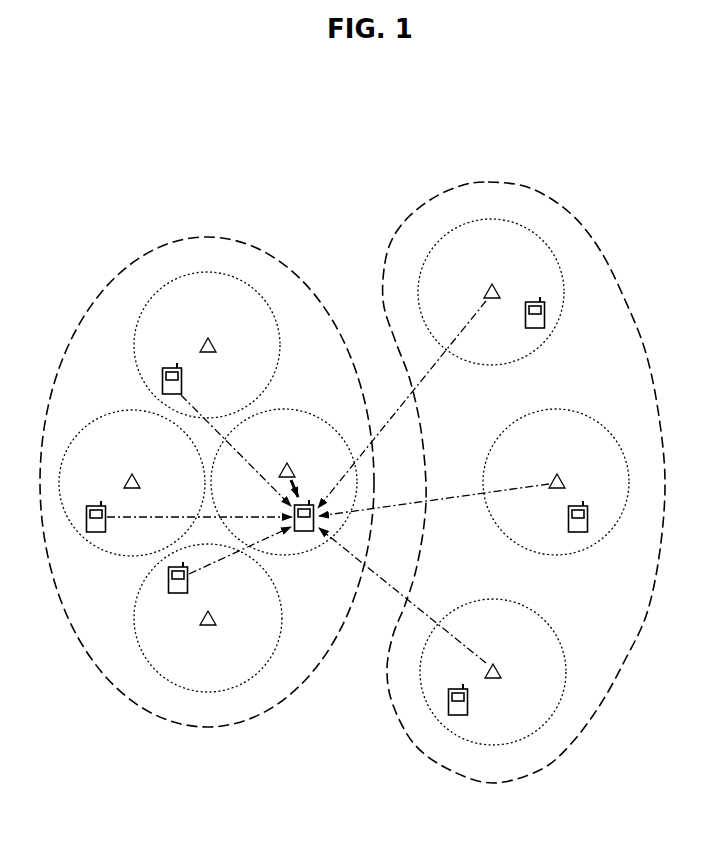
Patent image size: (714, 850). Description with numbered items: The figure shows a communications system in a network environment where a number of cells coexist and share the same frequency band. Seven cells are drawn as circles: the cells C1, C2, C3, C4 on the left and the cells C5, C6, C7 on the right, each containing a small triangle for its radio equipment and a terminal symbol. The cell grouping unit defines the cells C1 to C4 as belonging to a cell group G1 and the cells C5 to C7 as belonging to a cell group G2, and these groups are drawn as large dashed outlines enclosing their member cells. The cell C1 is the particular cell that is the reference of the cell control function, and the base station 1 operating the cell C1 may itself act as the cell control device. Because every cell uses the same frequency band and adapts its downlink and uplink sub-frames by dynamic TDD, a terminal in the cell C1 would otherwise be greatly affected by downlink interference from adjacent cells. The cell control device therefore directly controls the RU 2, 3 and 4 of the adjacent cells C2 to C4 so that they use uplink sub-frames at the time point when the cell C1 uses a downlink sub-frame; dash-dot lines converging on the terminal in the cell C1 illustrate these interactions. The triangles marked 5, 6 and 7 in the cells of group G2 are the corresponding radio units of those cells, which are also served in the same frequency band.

The base station 1 is at (292, 463).
The RU 2 is at (214, 340).
The RU 3 is at (139, 475).
The RU 4 is at (214, 611).
The base station of cell C5 5 is at (499, 285).
The base station of cell C6 6 is at (565, 475).
The base station of cell C7 7 is at (501, 664).
The cell C1 is at (314, 413).
The cell C2 is at (282, 347).
The cell C3 is at (101, 413).
The cell C4 is at (283, 618).
The cell C5 is at (560, 318).
The cell C6 is at (597, 419).
The cell C7 is at (556, 630).
The cell group G1 is at (207, 236).
The cell group G2 is at (487, 181).